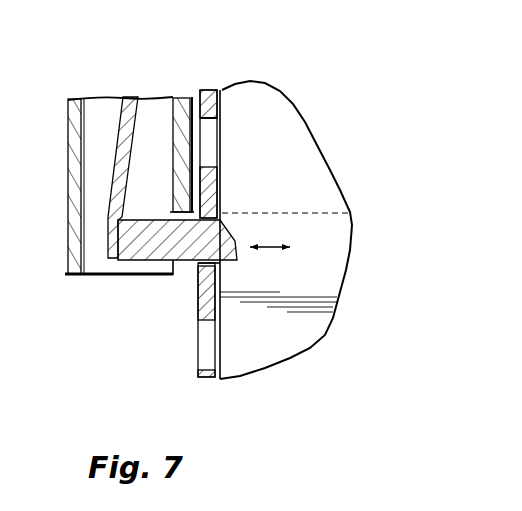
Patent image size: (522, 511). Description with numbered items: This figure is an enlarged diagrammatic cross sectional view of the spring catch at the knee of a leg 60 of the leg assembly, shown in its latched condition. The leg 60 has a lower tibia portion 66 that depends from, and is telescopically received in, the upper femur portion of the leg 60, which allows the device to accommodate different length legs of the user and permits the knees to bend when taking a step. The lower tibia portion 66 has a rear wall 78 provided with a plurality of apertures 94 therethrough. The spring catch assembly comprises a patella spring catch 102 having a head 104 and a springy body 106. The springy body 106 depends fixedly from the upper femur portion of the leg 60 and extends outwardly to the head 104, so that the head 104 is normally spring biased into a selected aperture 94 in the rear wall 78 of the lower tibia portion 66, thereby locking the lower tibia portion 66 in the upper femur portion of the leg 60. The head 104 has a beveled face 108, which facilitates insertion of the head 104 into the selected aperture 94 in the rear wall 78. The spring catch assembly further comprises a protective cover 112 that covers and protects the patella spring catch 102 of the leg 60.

The leg 60 is at (328, 138).
The lower tibia portion 66 is at (243, 102).
The rear wall 78 is at (198, 295).
The apertures 94 is at (223, 227).
The patella spring catch 102 is at (118, 113).
The head 104 is at (140, 264).
The springy body 106 is at (118, 185).
The beveled face 108 is at (237, 243).
The protective cover 112 is at (68, 240).